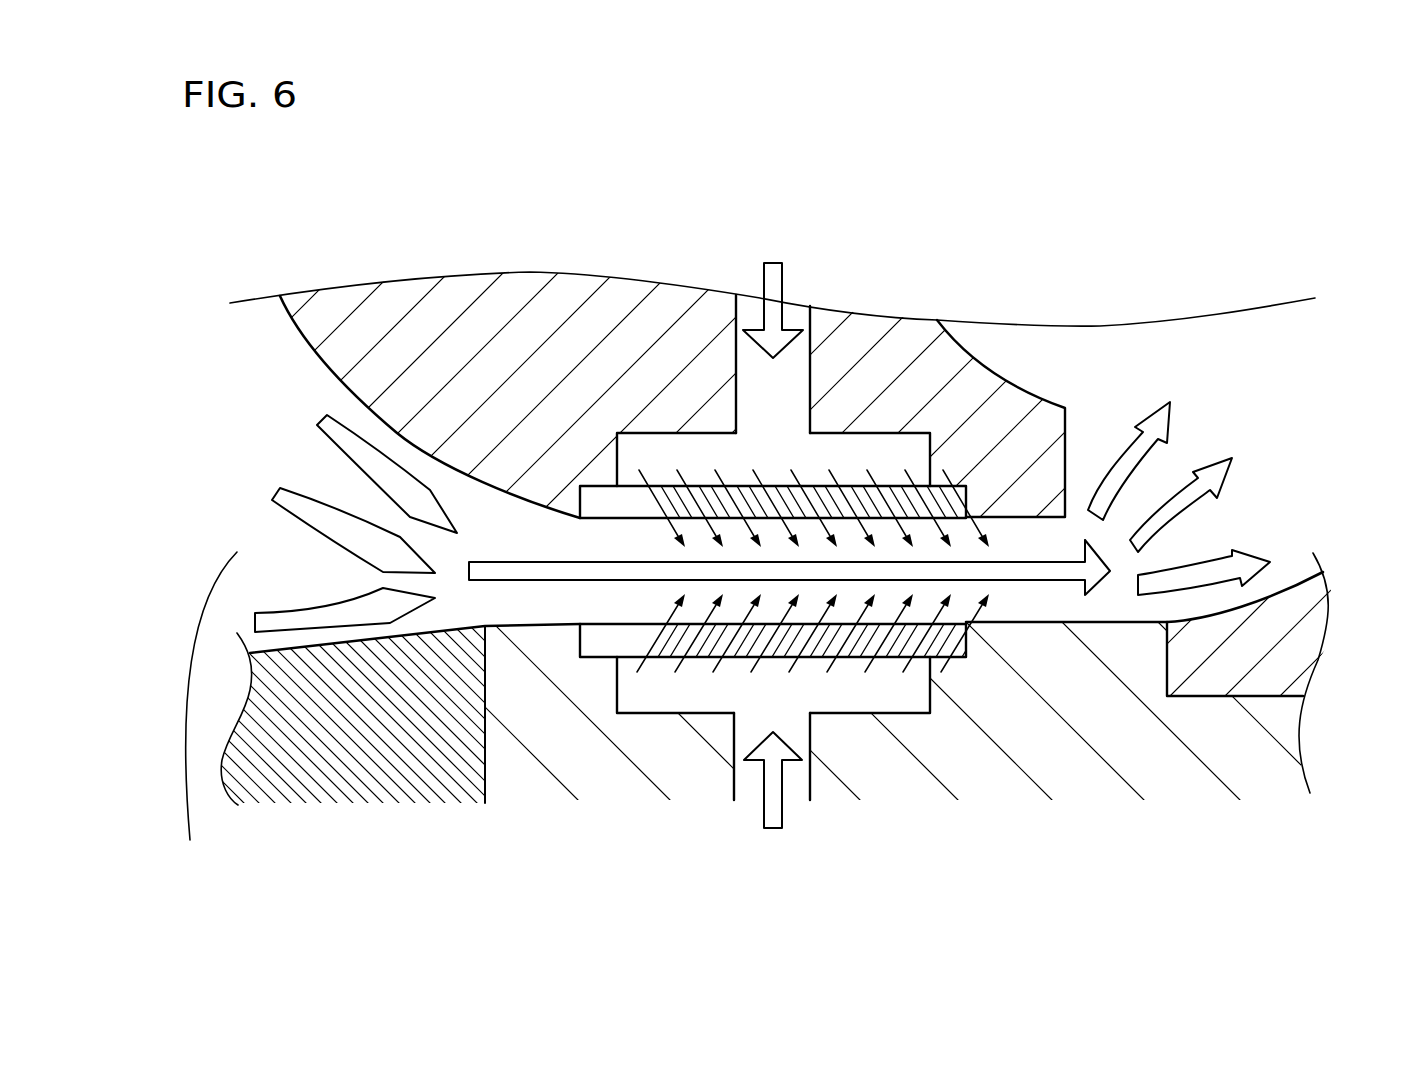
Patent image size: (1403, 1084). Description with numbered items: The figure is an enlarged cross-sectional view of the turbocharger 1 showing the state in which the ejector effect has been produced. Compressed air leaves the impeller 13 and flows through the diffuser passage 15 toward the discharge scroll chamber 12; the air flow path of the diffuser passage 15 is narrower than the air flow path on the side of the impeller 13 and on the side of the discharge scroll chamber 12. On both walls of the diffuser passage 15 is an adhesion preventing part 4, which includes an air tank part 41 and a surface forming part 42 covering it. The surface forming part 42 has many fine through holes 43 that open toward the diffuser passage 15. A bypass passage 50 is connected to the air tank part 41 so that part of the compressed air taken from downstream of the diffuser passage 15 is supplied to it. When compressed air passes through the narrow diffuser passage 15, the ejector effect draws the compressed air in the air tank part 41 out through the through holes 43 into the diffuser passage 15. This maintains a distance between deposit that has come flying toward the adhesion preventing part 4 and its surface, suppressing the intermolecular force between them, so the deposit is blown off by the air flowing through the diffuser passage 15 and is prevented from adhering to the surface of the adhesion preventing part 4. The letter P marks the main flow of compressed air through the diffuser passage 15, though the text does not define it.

The turbocharger 1 is at (1032, 193).
The adhesion preventing part 4 is at (562, 677).
The discharge scroll chamber 12 is at (1218, 370).
The impeller 13 is at (205, 717).
The diffuser passage 15 is at (1033, 593).
The air tank part 41 is at (880, 452).
The surface forming part 42 is at (945, 497).
The through holes 43 is at (933, 647).
The bypass passage 50 is at (793, 317).
The pipe P is at (535, 570).